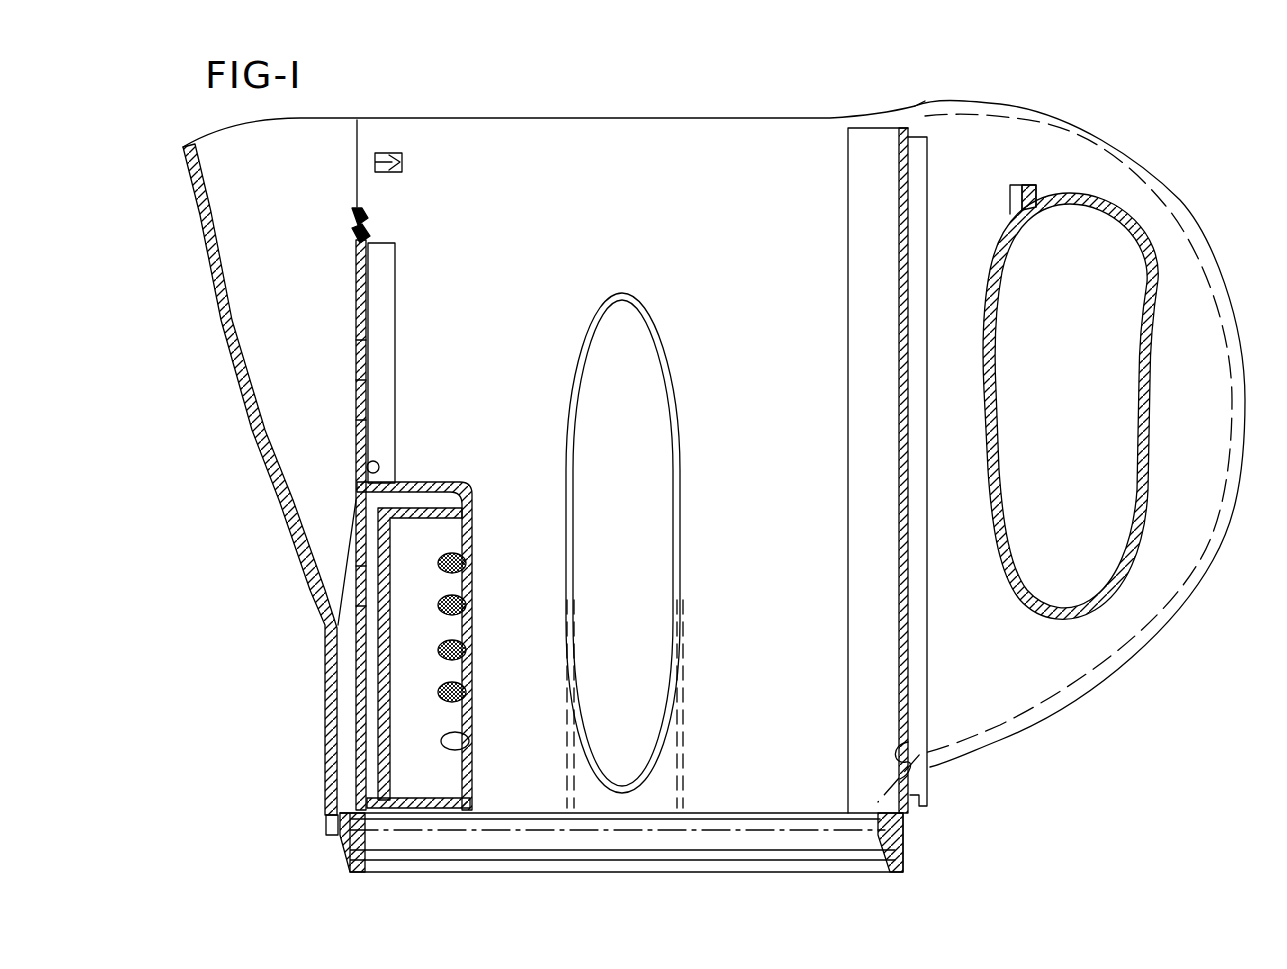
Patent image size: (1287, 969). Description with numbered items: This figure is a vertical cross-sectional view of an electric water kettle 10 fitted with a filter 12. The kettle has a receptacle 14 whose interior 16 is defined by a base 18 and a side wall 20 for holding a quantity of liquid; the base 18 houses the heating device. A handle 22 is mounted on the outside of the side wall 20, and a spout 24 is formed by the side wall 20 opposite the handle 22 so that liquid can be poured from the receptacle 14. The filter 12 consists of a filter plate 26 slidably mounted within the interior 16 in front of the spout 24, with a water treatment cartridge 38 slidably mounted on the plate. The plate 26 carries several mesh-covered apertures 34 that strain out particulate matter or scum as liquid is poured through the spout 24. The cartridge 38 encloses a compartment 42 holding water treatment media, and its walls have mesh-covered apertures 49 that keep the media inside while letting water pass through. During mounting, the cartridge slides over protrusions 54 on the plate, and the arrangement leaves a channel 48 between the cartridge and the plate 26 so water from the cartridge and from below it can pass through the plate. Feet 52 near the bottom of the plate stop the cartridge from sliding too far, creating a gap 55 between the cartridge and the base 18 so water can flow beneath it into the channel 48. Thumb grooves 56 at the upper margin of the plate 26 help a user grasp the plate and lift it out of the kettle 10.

The electric water kettle 10 is at (812, 90).
The filter 12 is at (414, 428).
The receptacle 14 is at (480, 111).
The interior 16 is at (636, 148).
The base 18 is at (770, 811).
The side wall 20 is at (918, 765).
The handle 22 is at (1128, 156).
The spout 24 is at (200, 188).
The filter plate 26 is at (356, 283).
The mesh-covered apertures 34 is at (355, 423).
The water treatment cartridge 38 is at (468, 478).
The compartment 42 is at (432, 718).
The channel 48 is at (370, 788).
The mesh-covered apertures 49 is at (470, 605).
The feet 52 is at (348, 838).
The protrusions 54 is at (380, 472).
The gap 55 is at (476, 806).
The thumb grooves 56 is at (356, 234).